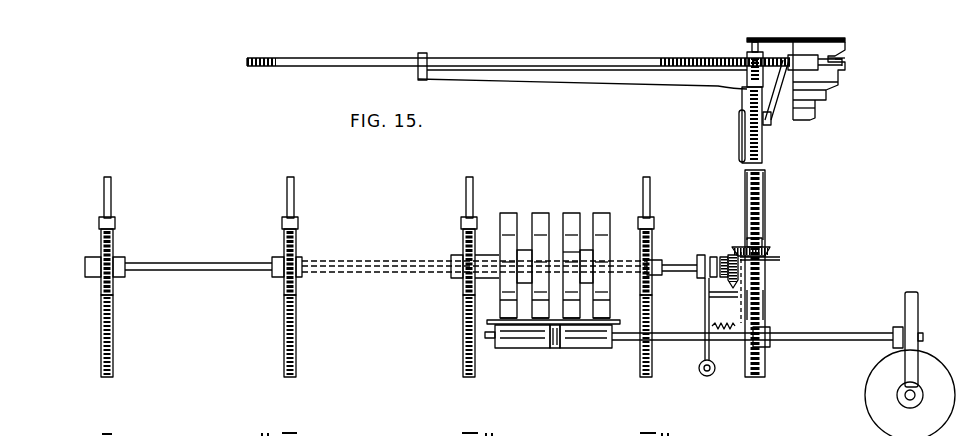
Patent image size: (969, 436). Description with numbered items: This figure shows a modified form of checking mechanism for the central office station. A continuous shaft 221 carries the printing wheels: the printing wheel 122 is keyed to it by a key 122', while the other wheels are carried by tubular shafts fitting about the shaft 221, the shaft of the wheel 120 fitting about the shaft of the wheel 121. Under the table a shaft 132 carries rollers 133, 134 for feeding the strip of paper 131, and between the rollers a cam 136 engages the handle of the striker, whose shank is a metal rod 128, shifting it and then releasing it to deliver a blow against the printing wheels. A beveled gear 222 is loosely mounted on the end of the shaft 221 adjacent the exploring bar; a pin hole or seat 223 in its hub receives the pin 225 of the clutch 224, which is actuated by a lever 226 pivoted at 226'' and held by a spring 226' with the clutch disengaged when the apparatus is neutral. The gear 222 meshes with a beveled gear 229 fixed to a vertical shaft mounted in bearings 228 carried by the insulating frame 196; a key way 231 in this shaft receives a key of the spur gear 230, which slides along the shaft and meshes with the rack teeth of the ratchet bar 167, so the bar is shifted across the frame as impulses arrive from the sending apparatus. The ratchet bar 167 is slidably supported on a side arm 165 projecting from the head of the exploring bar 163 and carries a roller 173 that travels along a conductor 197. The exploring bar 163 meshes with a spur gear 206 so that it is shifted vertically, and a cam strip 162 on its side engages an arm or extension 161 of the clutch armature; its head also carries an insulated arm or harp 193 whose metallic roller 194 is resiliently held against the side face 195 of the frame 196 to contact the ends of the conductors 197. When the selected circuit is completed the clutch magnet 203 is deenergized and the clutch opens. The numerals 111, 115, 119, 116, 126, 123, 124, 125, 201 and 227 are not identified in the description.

The rod 111 is at (112, 190).
The collar 115 is at (99, 222).
The upper rack 119 is at (113, 243).
The lower rack 116 is at (101, 334).
The continuous shaft 221 is at (185, 263).
The shaft 126 is at (506, 277).
The printing wheel 120 is at (507, 213).
The printing wheel 121 is at (540, 213).
The printing wheel 122 is at (571, 252).
The digit wheel 123 is at (602, 213).
The key 122' is at (560, 213).
The spacer 124 is at (588, 250).
The metal rod 128 is at (525, 250).
The bar 125 is at (487, 323).
The strip of paper 131 is at (494, 320).
The roller 133 is at (523, 348).
The roller 134 is at (589, 348).
The cam 136 is at (555, 348).
The shaft 132 is at (679, 338).
The exploring bar 163 is at (754, 303).
The spur gear 206 is at (757, 326).
The arm 201 is at (905, 306).
The clutch magnet 203 is at (879, 413).
The beveled gear 222 is at (733, 253).
The pin hole or seat 223 is at (724, 256).
The clutch 224 is at (700, 254).
The pin 225 is at (713, 256).
The lever 226 is at (701, 319).
The spring 226' is at (722, 317).
The pivot 226'' is at (708, 378).
The rack 227 is at (764, 204).
The bearings 228 is at (750, 41).
The beveled gear 229 is at (772, 250).
The key way 231 is at (760, 185).
The arm or extension 161 is at (748, 88).
The cam strip 162 is at (741, 146).
The side arm 165 is at (627, 81).
The ratchet bar 167 is at (578, 58).
The roller 173 is at (838, 56).
The arm or harp 193 is at (776, 106).
The metallic roller 194 is at (783, 55).
The side face 195 is at (800, 92).
The insulating frame 196 is at (810, 117).
The conductors 197 is at (838, 64).
The spur gear 230 is at (748, 66).